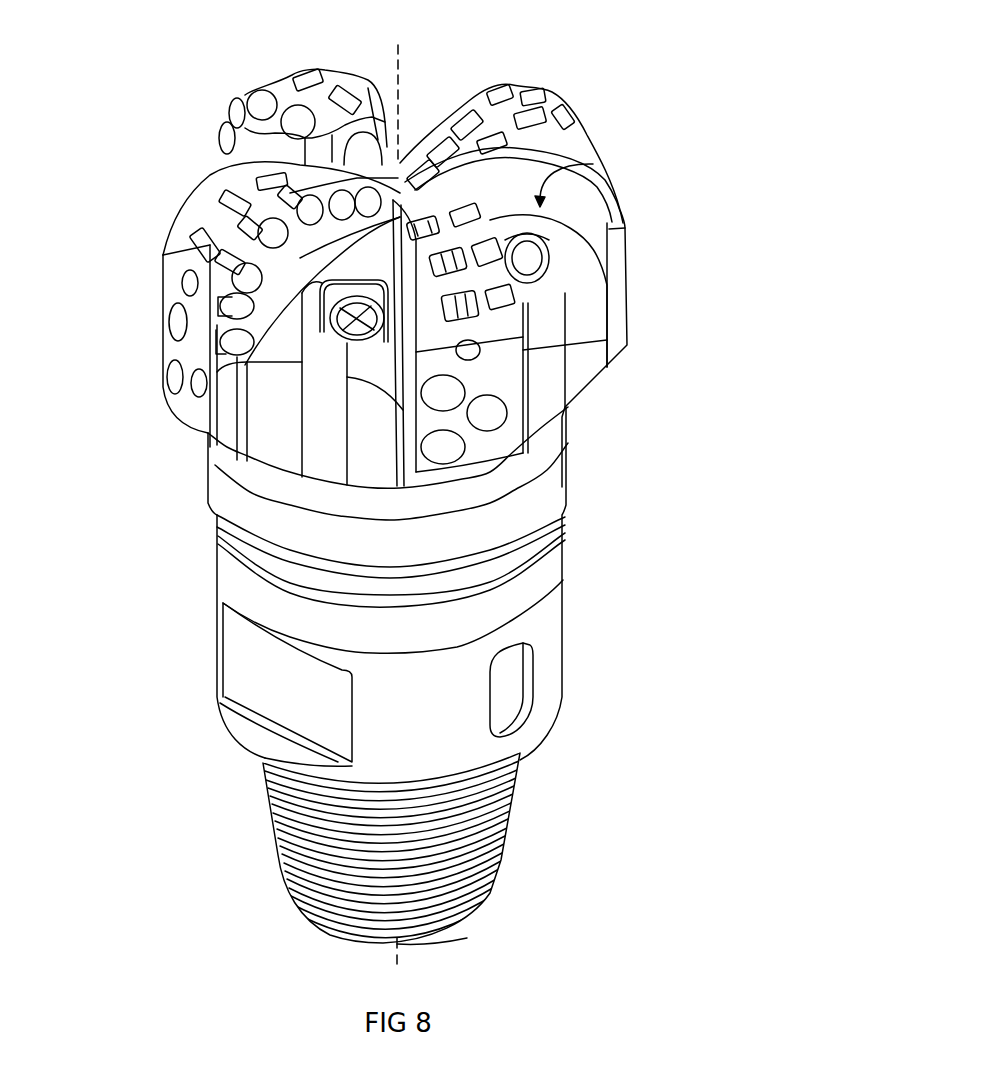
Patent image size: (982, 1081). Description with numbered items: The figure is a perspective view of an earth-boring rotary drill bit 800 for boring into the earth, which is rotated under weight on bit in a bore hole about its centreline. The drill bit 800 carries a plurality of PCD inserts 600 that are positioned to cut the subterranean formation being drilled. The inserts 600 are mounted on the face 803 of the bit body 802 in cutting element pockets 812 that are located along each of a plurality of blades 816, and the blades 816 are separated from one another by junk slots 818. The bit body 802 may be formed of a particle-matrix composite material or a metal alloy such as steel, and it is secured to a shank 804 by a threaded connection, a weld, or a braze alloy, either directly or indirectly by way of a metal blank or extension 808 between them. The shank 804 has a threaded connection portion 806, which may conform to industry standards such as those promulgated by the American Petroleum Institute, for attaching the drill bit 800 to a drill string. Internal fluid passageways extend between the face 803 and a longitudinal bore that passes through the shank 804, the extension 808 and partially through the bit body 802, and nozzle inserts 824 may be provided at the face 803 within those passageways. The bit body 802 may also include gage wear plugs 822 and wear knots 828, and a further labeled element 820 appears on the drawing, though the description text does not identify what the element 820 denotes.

The earth-boring rotary drill bit 800 is at (633, 43).
The PCD inserts 600 is at (467, 115).
The bit body 802 is at (633, 213).
The face 803 is at (555, 263).
The shank 804 is at (557, 647).
The threaded connection portion 806 is at (510, 837).
The extension 808 is at (567, 517).
The cutting element pockets 812 is at (230, 147).
The blades 816 is at (337, 67).
The junk slots 818 is at (593, 164).
The gauge pad 820 is at (614, 337).
The gage wear plugs 822 is at (163, 360).
The nozzle inserts 824 is at (255, 328).
The wear knots 828 is at (173, 273).